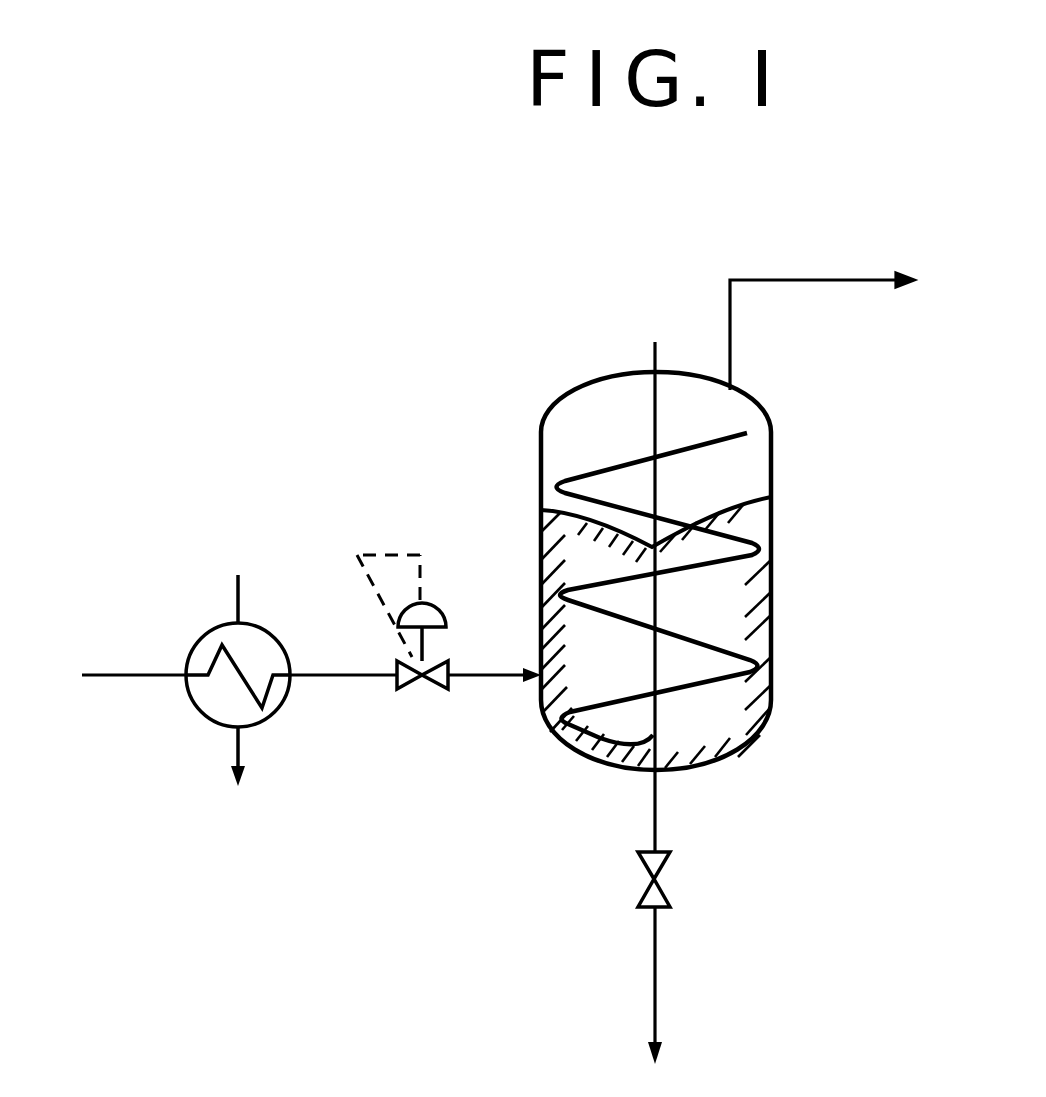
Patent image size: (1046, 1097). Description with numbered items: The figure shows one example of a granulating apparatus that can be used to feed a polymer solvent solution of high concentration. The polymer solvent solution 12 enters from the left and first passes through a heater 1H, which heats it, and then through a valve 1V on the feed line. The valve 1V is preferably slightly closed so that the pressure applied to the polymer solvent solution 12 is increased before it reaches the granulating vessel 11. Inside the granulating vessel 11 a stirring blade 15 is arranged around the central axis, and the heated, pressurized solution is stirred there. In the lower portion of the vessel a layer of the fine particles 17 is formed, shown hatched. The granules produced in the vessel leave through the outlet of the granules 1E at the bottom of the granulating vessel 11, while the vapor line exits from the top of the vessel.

The granulating vessel 11 is at (771, 600).
The polymer solvent solution 12 is at (152, 692).
The stirring blade 15 is at (727, 437).
The layer of the fine particles 17 is at (755, 705).
The heater 1H is at (290, 703).
The valve 1V is at (423, 690).
The outlet of the granules 1E is at (680, 968).